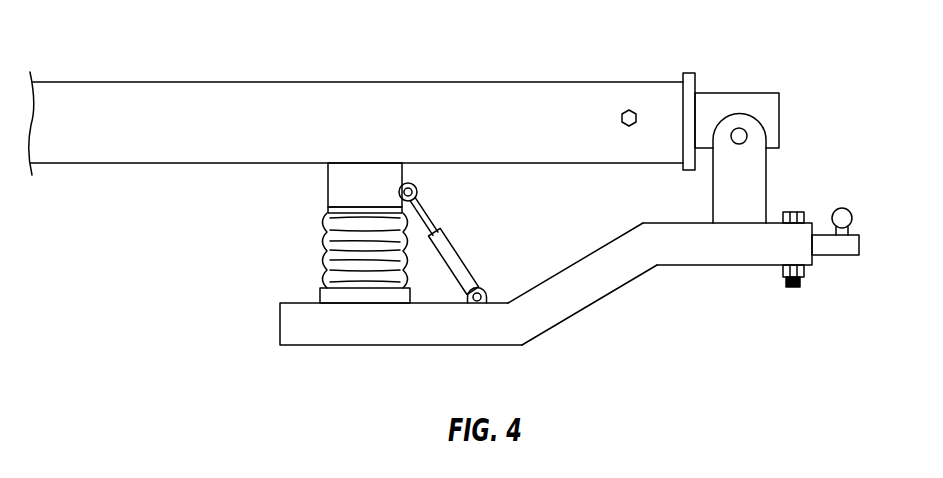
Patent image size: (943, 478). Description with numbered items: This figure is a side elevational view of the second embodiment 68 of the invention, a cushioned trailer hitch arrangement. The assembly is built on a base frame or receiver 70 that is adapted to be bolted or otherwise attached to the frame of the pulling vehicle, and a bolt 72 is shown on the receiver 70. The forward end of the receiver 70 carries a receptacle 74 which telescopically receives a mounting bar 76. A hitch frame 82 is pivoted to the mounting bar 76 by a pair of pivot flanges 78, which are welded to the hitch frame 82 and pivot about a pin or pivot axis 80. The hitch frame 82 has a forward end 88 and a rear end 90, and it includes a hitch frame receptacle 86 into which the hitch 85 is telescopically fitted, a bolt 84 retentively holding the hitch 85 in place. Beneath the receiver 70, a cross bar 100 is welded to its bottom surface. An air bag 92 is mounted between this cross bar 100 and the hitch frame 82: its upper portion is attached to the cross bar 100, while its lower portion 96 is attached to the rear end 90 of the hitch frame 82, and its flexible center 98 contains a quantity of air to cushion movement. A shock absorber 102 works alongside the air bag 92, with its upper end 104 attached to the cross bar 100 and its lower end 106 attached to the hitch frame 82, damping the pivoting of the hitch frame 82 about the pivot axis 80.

The second embodiment 68 is at (356, 90).
The base frame or receiver 70 is at (646, 81).
The bolt 72 is at (621, 119).
The receptacle 74 is at (691, 72).
The mounting bar 76 is at (770, 93).
The pivot flanges 78 is at (713, 203).
The pin or pivot axis 80 is at (745, 143).
The hitch frame 82 is at (614, 309).
The bolt 84 is at (797, 289).
The hitch 85 is at (852, 217).
The hitch frame receptacle 86 is at (807, 267).
The forward end 88 is at (787, 240).
The rear end 90 is at (280, 323).
The air bag 92 is at (311, 233).
The lower portion 96 is at (318, 297).
The flexible center 98 is at (338, 262).
The cross bar 100 is at (345, 175).
The shock absorber 102 is at (474, 234).
The upper end 104 is at (414, 190).
The lower end 106 is at (489, 298).